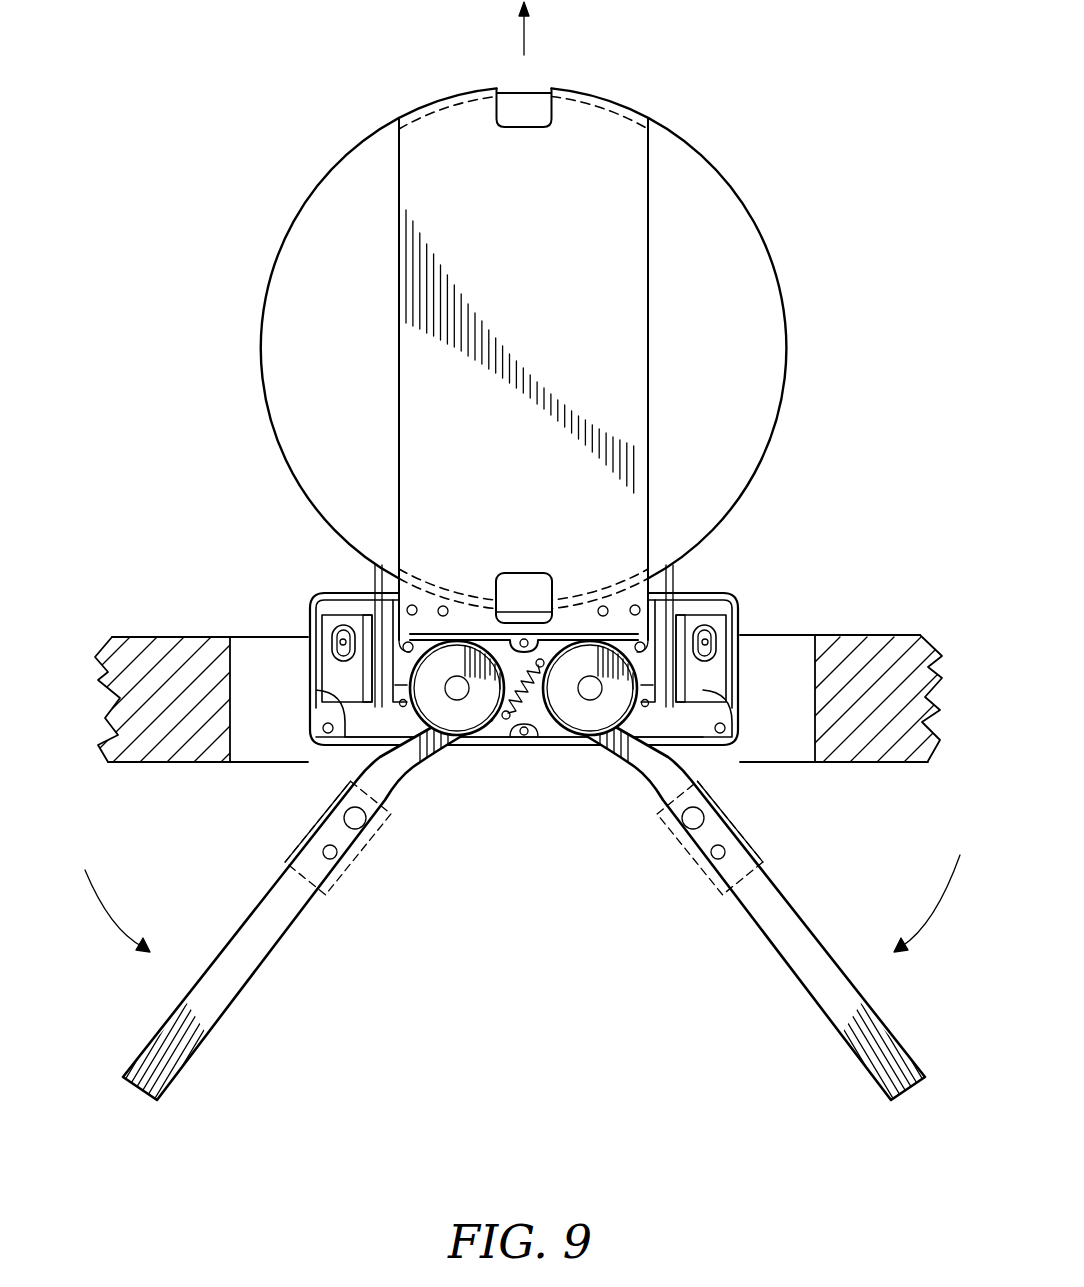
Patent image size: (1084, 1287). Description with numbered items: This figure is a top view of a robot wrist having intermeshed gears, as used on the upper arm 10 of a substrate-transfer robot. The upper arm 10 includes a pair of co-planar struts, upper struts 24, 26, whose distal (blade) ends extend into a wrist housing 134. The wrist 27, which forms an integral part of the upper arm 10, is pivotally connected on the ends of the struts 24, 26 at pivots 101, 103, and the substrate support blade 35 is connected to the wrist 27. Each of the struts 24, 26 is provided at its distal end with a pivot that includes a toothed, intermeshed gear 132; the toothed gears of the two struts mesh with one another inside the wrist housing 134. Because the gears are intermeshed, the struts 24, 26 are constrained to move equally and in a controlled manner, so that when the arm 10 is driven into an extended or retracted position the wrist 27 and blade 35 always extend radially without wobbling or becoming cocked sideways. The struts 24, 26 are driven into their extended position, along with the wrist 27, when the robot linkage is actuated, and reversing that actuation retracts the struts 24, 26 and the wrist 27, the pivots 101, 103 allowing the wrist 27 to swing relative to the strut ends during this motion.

The upper arm 10 is at (252, 830).
The upper strut 24 is at (773, 960).
The upper strut 26 is at (295, 935).
The robot wrist 27 is at (762, 586).
The substrate support blade 35 is at (312, 458).
The pivot 101 is at (590, 718).
The pivot 103 is at (458, 718).
The toothed intermeshed gear 132 is at (540, 718).
The wrist housing 134 is at (722, 745).